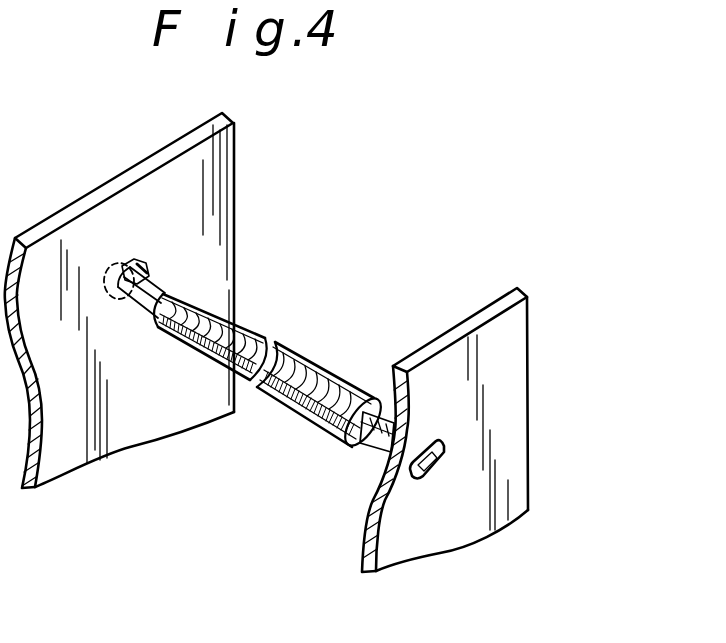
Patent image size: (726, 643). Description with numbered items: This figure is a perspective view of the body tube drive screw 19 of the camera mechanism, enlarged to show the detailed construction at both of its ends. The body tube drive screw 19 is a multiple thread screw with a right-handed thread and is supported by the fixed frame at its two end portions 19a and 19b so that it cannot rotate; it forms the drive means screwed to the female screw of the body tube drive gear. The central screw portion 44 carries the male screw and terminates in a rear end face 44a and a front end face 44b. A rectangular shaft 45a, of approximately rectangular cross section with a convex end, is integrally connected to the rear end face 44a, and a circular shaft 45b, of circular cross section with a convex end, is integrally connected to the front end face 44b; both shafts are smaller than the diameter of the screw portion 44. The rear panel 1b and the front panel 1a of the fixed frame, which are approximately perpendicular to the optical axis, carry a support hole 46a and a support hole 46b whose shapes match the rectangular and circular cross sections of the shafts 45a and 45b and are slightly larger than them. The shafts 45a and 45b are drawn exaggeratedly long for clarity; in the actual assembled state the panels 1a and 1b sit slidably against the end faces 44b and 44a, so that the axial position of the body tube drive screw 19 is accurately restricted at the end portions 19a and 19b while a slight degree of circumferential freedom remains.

The front panel 1a is at (152, 157).
The rear panel 1b is at (478, 313).
The body tube drive screw 19 is at (256, 374).
The end portion of the body tube drive screw 19a is at (434, 480).
The end portion of the body tube drive screw 19b is at (116, 260).
The screw portion 44 is at (274, 361).
The rear end face of the screw portion 44a is at (377, 400).
The front end face of the screw portion 44b is at (167, 290).
The rectangular shaft 45a is at (392, 450).
The circular shaft 45b is at (145, 312).
The support hole 46a is at (444, 462).
The support hole 46b is at (143, 273).